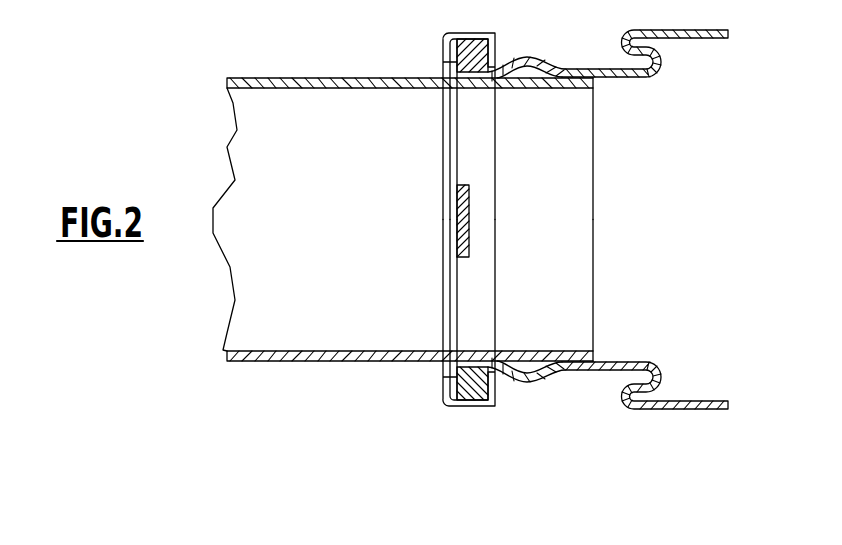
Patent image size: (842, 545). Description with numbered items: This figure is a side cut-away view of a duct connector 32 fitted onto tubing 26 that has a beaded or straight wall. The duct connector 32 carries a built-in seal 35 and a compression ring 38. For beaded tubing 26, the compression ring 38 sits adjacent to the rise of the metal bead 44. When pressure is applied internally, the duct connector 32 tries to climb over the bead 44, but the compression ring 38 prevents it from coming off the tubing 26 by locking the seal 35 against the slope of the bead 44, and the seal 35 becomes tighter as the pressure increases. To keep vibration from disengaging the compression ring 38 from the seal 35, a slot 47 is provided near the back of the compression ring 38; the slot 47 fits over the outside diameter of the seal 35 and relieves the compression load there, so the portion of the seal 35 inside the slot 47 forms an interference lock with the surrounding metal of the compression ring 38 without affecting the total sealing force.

The tubing 26 is at (278, 374).
The duct connector 32 is at (608, 212).
The seal 35 is at (470, 43).
The compression ring 38 is at (479, 422).
The bead 44 is at (528, 105).
The slot 47 is at (458, 207).